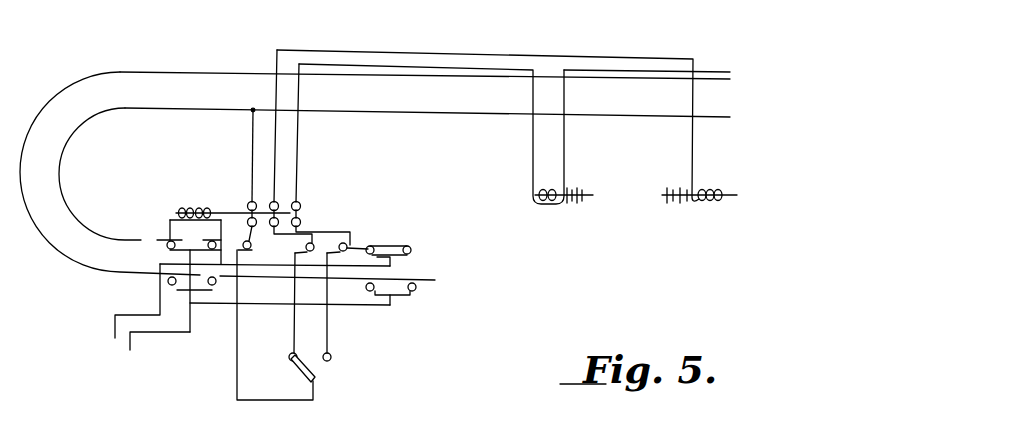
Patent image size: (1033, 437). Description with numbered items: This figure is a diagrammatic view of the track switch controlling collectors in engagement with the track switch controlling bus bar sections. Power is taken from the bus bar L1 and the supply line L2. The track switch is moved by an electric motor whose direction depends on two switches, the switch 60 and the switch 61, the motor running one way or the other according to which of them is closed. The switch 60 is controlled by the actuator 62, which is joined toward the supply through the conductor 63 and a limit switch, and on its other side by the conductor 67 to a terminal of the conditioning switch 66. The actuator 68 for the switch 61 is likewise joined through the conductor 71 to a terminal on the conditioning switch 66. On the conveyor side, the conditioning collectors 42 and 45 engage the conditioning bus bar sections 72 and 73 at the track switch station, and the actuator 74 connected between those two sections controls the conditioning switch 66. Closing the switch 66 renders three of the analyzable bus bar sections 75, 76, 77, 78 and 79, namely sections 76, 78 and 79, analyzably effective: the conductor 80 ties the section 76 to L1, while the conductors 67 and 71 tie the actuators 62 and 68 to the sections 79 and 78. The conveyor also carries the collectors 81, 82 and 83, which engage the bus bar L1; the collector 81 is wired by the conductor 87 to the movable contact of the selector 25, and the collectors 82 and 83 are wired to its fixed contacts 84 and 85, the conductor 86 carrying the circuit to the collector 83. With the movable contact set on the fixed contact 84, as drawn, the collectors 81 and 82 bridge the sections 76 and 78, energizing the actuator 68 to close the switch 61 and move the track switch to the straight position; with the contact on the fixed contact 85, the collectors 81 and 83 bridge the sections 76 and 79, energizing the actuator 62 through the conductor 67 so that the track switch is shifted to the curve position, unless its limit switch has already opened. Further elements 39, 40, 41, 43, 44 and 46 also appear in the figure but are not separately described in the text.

The bus bar L1 is at (112, 108).
The supply line L2 is at (131, 72).
The conductor 71 is at (277, 52).
The conductor 67 is at (494, 68).
The conductor 63 is at (609, 72).
The actuator 62 is at (547, 204).
The switch 60 is at (571, 188).
The switch 61 is at (675, 203).
The actuator 68 is at (708, 188).
The conductor 80 is at (253, 136).
The conditioning switch 66 is at (250, 200).
The conditioning collector 45 is at (205, 208).
The actuator 74 is at (191, 208).
The conditioning bus bar section 73 is at (170, 237).
The contact 46 is at (166, 246).
The analyzable bus bar section 75 is at (207, 241).
The collector 81 is at (246, 240).
The analyzable bus bar section 76 is at (257, 259).
The collector 82 is at (313, 243).
The analyzable bus bar section 77 is at (290, 241).
The analyzable bus bar section 78 is at (323, 232).
The analyzable bus bar section 79 is at (350, 240).
The collector 83 is at (360, 249).
The relay 44 is at (402, 248).
The contact 43 is at (412, 252).
The conditioning collector 42 is at (167, 283).
The contact 41 is at (215, 288).
The conditioning bus bar section 72 is at (222, 278).
The contact 40 is at (368, 291).
The contact 39 is at (413, 291).
The conductor 87 is at (237, 370).
The fixed contact 84 is at (289, 357).
The fixed contact 85 is at (331, 357).
The selector 25 is at (318, 381).
The conductor 86 is at (327, 333).